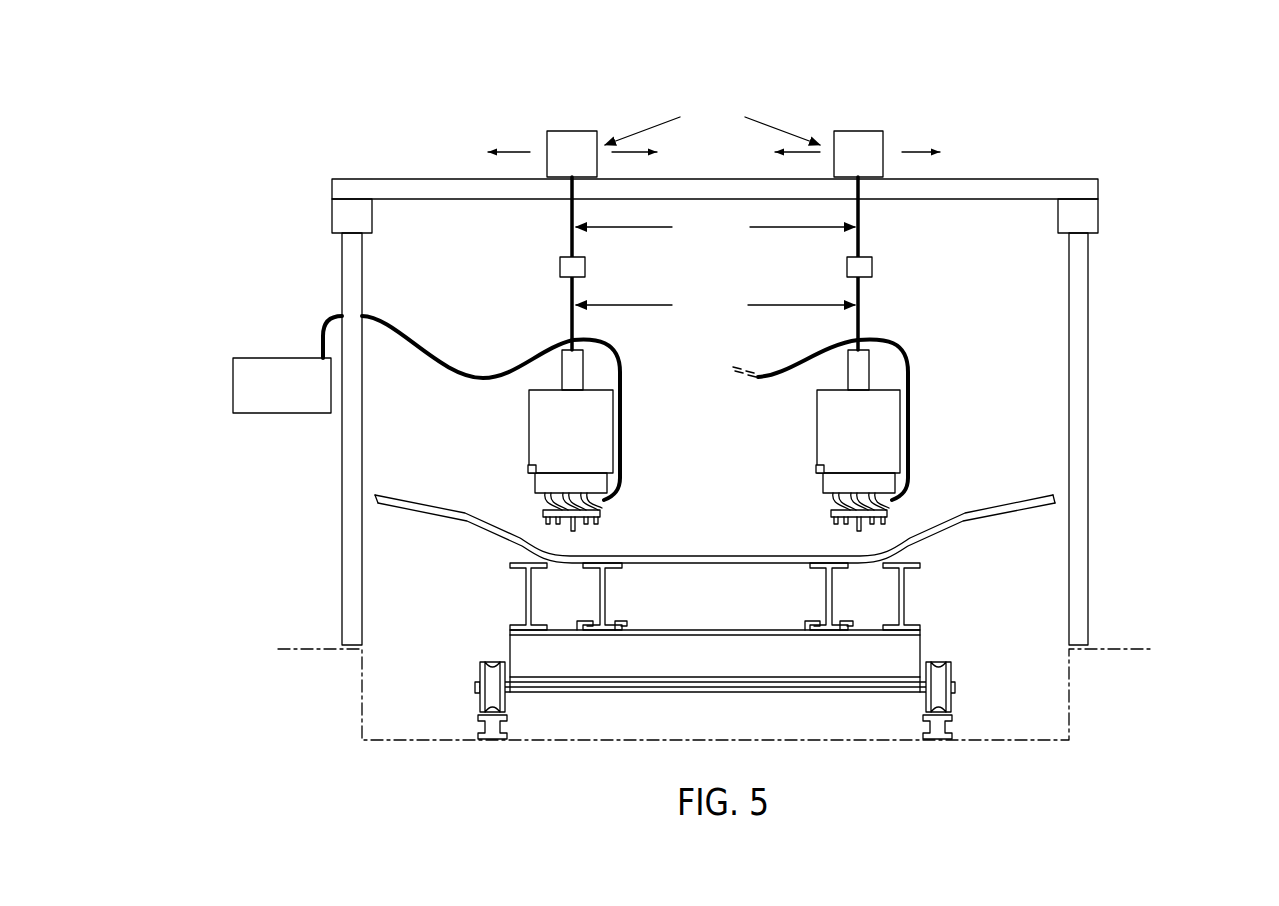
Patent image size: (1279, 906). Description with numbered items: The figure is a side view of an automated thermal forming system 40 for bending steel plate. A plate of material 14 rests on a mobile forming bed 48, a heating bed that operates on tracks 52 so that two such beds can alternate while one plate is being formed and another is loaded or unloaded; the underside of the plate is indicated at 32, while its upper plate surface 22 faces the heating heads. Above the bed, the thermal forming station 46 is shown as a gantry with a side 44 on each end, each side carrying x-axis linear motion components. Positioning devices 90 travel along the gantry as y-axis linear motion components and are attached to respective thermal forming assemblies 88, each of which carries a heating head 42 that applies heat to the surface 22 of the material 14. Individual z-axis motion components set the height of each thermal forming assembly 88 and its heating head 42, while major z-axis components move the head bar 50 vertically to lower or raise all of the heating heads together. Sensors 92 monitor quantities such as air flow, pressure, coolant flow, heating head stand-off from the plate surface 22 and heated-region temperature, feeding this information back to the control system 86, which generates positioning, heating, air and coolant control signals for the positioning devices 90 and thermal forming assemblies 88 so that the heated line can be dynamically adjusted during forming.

The material 14 is at (715, 554).
The surface 22 is at (715, 554).
The second surface of workpiece 32 is at (715, 565).
The automated thermal forming system 40 is at (1007, 140).
The heating head 42 is at (574, 531).
The side 44 is at (298, 211).
The thermal forming station 46 is at (430, 178).
The mobile forming bed 48 is at (466, 603).
The head bar 50 is at (543, 278).
The tracks 52 is at (460, 727).
The control system 86 is at (268, 357).
The thermal forming assembly 88 is at (540, 407).
The positioning device 90 is at (572, 135).
The sensor 92 is at (527, 470).